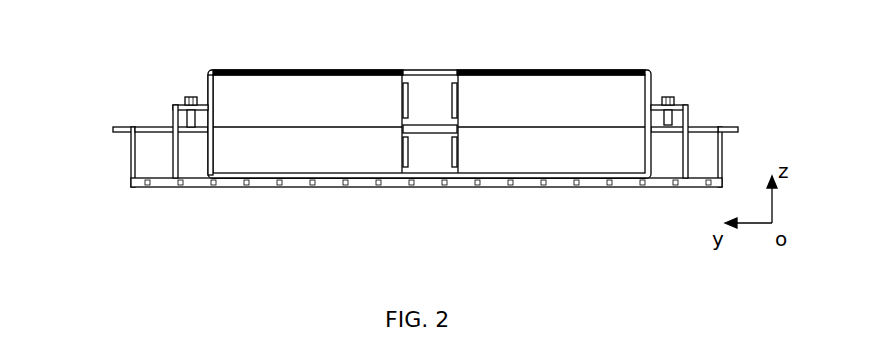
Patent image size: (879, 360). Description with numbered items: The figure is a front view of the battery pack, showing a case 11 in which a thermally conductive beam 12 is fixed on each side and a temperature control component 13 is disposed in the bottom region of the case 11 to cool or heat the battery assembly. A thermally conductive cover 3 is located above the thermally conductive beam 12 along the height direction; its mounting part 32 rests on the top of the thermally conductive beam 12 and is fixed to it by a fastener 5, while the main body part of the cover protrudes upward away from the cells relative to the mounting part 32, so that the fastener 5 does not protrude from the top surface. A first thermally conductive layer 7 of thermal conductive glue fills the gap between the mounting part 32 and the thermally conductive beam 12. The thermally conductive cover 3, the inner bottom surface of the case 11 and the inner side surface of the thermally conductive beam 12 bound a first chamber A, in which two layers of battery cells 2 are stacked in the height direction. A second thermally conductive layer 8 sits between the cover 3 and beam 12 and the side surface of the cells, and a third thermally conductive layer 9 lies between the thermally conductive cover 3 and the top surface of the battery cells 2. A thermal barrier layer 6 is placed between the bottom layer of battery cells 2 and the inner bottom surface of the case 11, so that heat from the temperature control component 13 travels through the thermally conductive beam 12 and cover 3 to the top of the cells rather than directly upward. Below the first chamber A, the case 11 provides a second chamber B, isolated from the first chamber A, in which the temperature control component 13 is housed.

The battery cell 2 is at (283, 97).
The thermally conductive cover 3 is at (427, 72).
The fastener 5 is at (188, 96).
The thermal barrier layer 6 is at (299, 178).
The first thermally conductive layer 7 is at (173, 106).
The second thermally conductive layer 8 is at (215, 100).
The third thermally conductive layer 9 is at (543, 72).
The case 11 is at (131, 141).
The thermally conductive beam 12 is at (172, 163).
The temperature control component 13 is at (527, 186).
The mounting part 32 is at (685, 105).
The first chamber A is at (428, 158).
The second chamber B is at (130, 186).